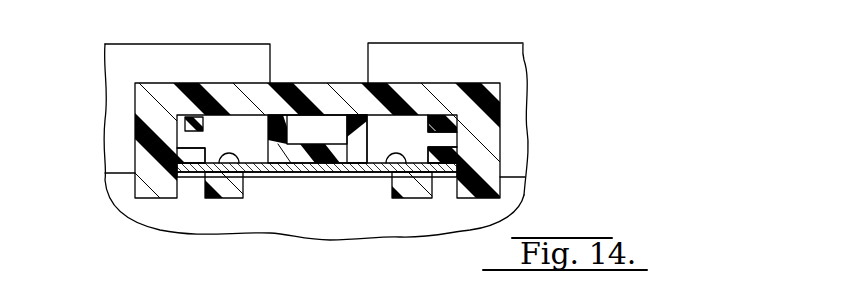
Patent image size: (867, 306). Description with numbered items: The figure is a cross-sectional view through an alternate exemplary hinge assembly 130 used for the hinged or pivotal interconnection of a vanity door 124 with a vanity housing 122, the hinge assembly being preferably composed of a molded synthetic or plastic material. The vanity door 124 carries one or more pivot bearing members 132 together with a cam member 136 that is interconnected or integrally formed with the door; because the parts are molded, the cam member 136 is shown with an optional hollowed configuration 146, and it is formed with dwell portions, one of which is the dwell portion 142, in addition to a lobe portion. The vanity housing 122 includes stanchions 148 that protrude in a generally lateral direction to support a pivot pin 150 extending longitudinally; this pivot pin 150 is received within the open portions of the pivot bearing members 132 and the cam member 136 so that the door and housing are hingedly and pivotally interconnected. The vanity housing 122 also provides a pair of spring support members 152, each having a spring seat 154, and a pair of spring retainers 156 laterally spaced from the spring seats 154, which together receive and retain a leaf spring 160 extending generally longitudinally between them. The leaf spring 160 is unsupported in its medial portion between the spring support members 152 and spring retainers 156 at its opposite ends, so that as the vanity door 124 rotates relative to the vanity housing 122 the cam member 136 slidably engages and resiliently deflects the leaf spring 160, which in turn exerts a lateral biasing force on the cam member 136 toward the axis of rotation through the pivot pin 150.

The vanity housing 122 is at (338, 240).
The vanity door 124 is at (470, 57).
The hinge assembly 130 is at (541, 92).
The pivot bearing member 132 is at (190, 127).
The cam member 136 is at (258, 126).
The dwell portion 142 is at (317, 177).
The hollowed configuration 146 is at (344, 128).
The stanchion 148 is at (150, 98).
The pivot pin 150 is at (368, 83).
The spring support member 152 is at (222, 193).
The spring seat 154 is at (228, 163).
The spring retainer 156 is at (470, 157).
The leaf spring 160 is at (257, 177).